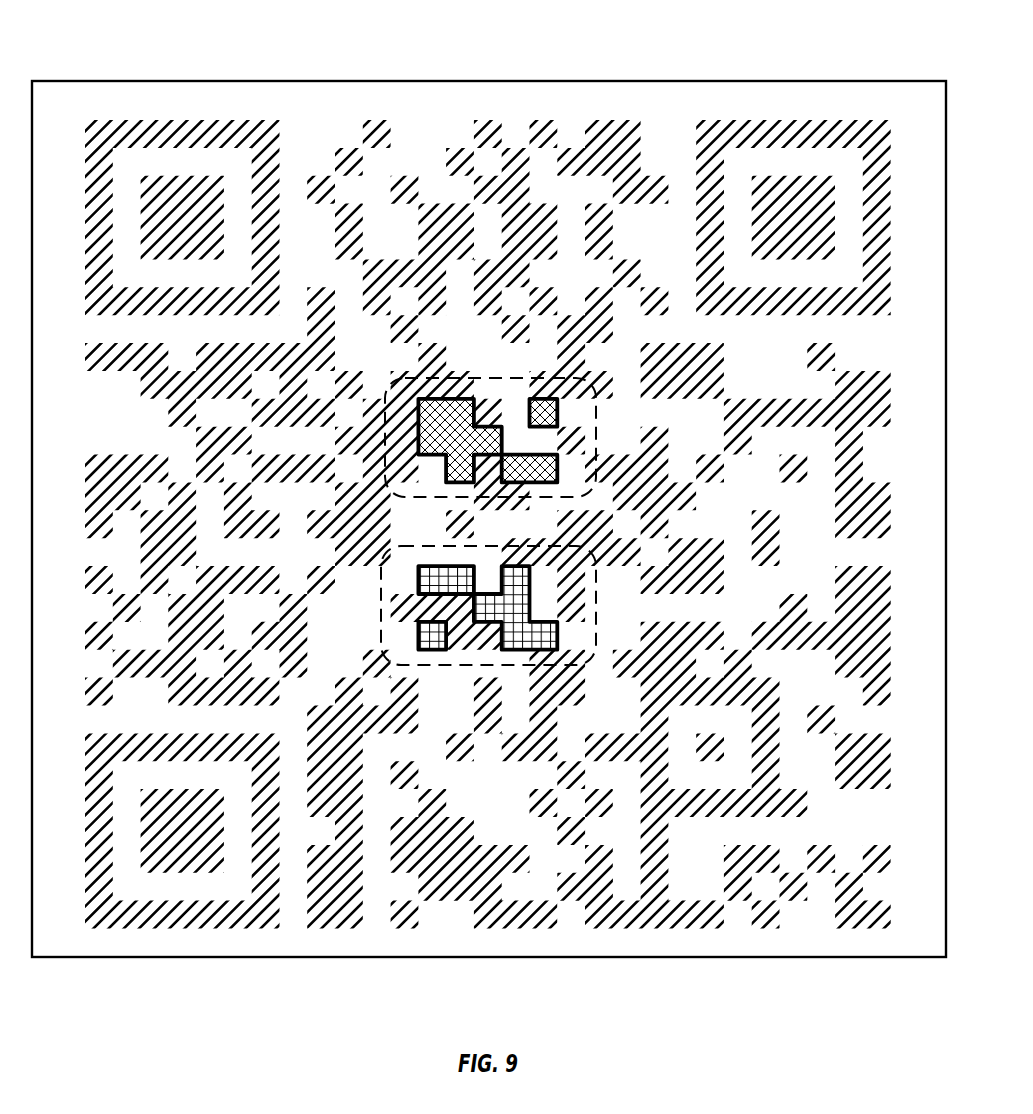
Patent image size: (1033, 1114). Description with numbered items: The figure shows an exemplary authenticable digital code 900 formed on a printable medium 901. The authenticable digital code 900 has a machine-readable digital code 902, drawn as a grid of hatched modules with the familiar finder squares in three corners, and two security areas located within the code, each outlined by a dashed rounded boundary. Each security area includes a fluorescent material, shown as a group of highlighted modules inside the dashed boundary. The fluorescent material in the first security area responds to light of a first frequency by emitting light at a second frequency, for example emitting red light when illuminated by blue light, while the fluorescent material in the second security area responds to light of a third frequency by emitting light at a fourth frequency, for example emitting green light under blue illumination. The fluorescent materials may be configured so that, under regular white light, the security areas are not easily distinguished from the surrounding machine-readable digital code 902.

The authenticable digital code 900 is at (516, 513).
The printable medium 901 is at (127, 64).
The machine-readable digital code 902 is at (830, 100).